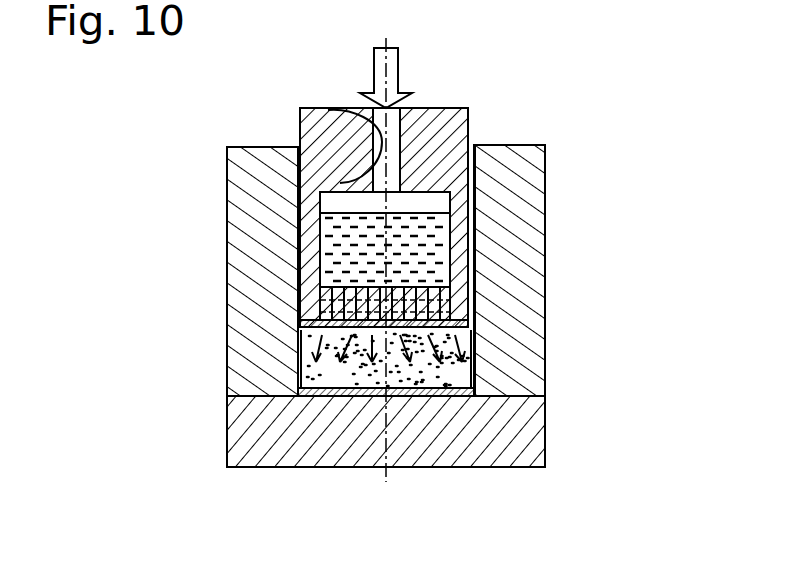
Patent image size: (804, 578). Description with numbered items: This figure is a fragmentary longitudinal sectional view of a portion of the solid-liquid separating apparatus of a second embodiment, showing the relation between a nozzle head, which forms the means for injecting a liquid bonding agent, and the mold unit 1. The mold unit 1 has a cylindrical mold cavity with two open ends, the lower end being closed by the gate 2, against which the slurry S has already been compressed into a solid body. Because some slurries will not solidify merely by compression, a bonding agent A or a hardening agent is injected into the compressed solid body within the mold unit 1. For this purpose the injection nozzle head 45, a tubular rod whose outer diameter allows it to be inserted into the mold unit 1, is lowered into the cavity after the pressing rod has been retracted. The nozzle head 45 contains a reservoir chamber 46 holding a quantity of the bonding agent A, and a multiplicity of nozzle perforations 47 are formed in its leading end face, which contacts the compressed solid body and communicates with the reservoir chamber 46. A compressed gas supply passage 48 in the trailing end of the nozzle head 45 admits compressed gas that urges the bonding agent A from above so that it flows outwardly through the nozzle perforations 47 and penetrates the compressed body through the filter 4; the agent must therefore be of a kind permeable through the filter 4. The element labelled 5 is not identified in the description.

The mold unit 1 is at (515, 370).
The gate 2 is at (495, 430).
The filter 4 is at (297, 290).
The bottom filter plate 5 is at (365, 398).
The injection nozzle head 45 is at (465, 125).
The reservoir chamber 46 is at (366, 120).
The nozzle perforations 47 is at (460, 296).
The compressed gas supply passage 48 is at (366, 120).
The bonding agent A is at (430, 246).
The slurry S is at (320, 397).